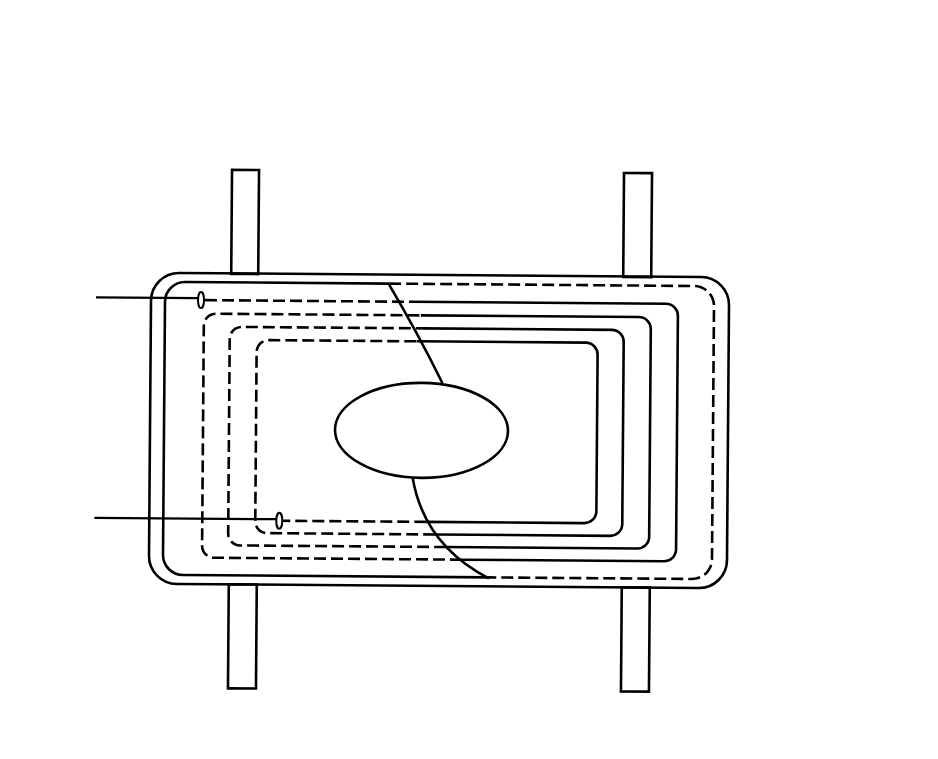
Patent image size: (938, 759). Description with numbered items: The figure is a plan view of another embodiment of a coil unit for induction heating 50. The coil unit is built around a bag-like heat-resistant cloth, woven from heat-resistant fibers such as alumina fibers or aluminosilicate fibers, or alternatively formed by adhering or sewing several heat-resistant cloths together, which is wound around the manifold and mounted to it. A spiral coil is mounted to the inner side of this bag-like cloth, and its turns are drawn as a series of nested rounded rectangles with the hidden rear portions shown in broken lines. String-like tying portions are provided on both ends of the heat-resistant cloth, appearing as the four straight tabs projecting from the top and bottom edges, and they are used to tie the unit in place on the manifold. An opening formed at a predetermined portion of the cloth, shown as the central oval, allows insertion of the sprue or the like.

The coil unit for induction heating 50 is at (573, 148).